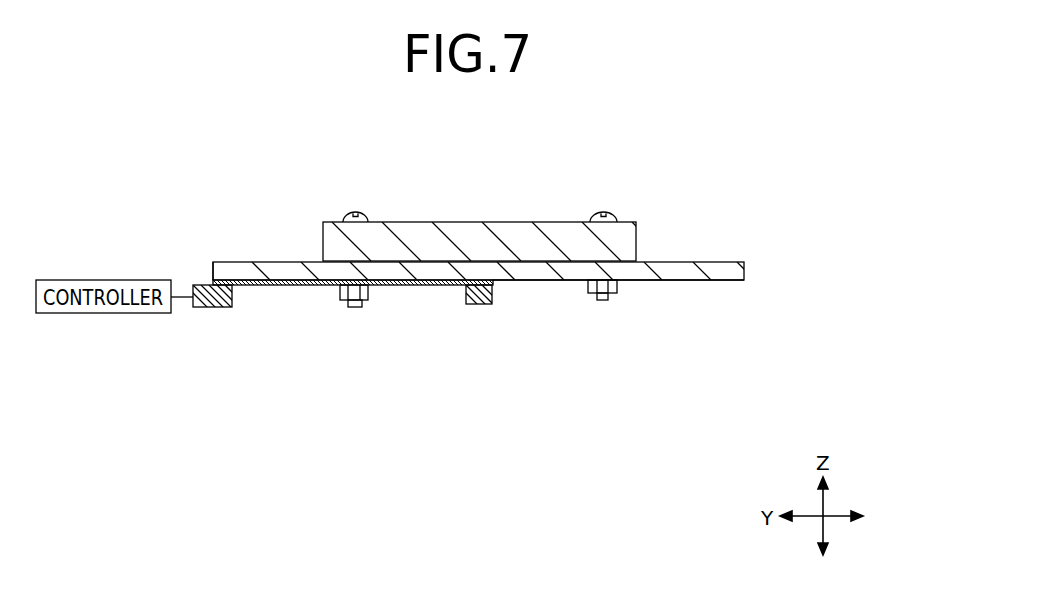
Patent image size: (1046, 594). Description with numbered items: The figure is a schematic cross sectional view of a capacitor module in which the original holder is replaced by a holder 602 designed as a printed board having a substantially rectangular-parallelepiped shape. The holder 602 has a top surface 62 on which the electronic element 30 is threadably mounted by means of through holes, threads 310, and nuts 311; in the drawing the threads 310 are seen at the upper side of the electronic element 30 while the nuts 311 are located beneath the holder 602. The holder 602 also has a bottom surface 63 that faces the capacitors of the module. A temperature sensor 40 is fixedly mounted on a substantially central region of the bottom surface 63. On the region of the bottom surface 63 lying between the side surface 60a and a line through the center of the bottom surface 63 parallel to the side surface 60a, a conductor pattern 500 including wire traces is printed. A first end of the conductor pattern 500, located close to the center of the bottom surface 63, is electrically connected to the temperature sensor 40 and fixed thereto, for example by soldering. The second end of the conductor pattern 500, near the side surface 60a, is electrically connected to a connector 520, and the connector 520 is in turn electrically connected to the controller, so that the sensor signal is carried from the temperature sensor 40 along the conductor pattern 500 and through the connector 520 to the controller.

The electronic element 30 is at (620, 243).
The threads 310 is at (348, 212).
The nuts 311 is at (342, 306).
The temperature sensor 40 is at (477, 305).
The top surface 62 is at (718, 262).
The side surface 60a is at (212, 273).
The bottom surface 63 is at (718, 281).
The conductor pattern 500 is at (290, 285).
The connector 520 is at (212, 308).
The holder 602 is at (497, 287).